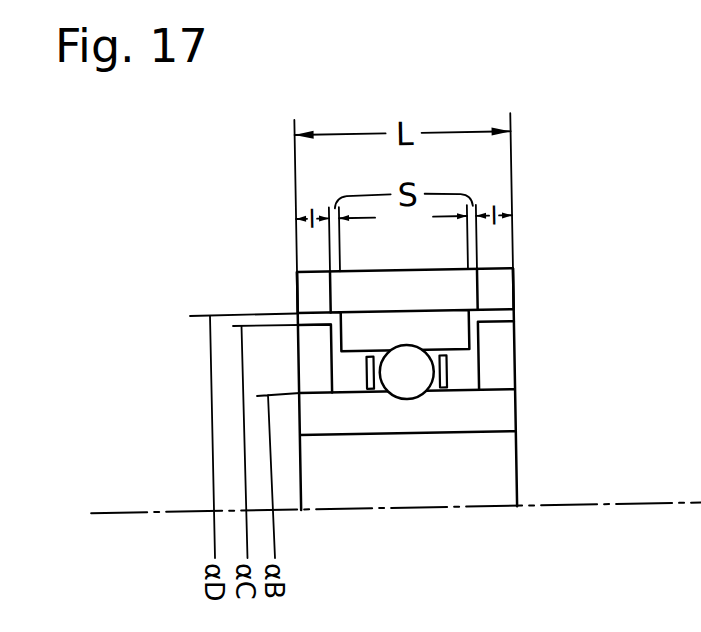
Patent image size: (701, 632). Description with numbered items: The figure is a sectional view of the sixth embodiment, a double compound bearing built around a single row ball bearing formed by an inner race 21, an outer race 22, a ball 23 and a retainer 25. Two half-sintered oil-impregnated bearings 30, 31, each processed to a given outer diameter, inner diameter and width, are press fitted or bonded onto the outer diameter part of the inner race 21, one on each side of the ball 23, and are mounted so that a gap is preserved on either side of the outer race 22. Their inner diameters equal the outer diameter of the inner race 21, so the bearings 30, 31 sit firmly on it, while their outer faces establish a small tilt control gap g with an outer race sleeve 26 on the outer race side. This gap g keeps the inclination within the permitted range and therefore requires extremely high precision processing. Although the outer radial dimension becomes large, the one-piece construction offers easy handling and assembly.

The inner race 21 is at (490, 411).
The outer race 22 is at (444, 322).
The ball 23 is at (445, 378).
The retainer 25 is at (445, 362).
The outer race sleeve 26 is at (317, 302).
The half-sintered oil-impregnated bearing 30 is at (320, 362).
The half-sintered oil-impregnated bearing 31 is at (496, 331).
The tilt control gap g is at (248, 320).